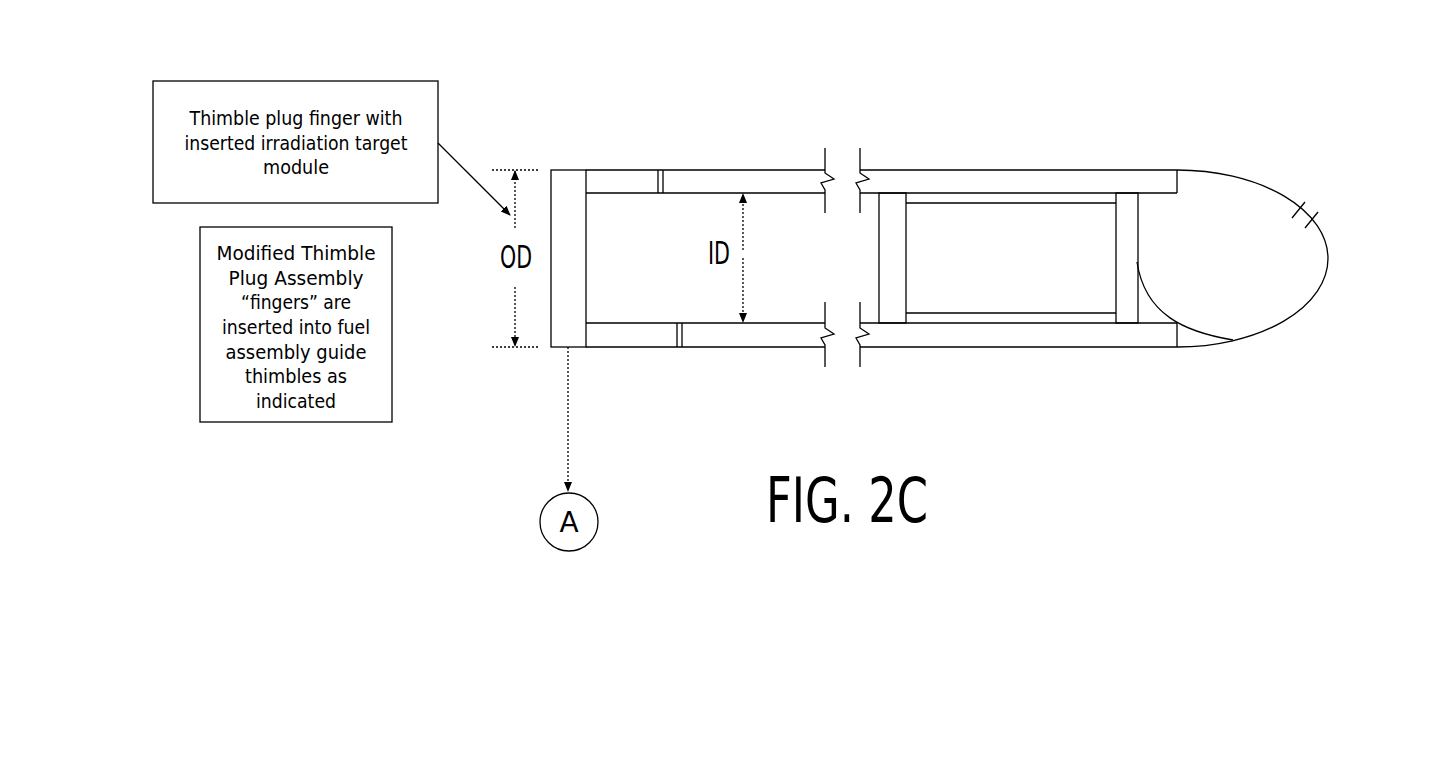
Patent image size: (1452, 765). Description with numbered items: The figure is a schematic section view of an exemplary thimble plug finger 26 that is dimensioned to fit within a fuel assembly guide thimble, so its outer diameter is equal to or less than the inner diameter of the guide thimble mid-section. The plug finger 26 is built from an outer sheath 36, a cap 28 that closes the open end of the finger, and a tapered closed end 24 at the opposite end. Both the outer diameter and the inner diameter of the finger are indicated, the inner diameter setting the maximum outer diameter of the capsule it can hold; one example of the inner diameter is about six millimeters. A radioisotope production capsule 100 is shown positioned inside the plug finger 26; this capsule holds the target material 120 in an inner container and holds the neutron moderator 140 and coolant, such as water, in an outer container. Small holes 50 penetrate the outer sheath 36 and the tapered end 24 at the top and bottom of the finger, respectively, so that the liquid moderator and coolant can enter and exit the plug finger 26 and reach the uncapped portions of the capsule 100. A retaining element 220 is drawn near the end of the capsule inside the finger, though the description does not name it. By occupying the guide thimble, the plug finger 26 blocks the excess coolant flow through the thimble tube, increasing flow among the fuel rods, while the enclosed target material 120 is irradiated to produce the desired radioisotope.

The thimble plug finger 26 is at (1322, 123).
The cap 28 is at (563, 170).
The outer sheath 36 is at (787, 170).
The small holes 50 is at (657, 170).
The tapered closed end 24 is at (1328, 258).
The neutron moderator 140 is at (1010, 203).
The target module retaining spacer 220 is at (1123, 203).
The target material 120 is at (1010, 307).
The radioisotope production capsule 100 is at (1233, 340).